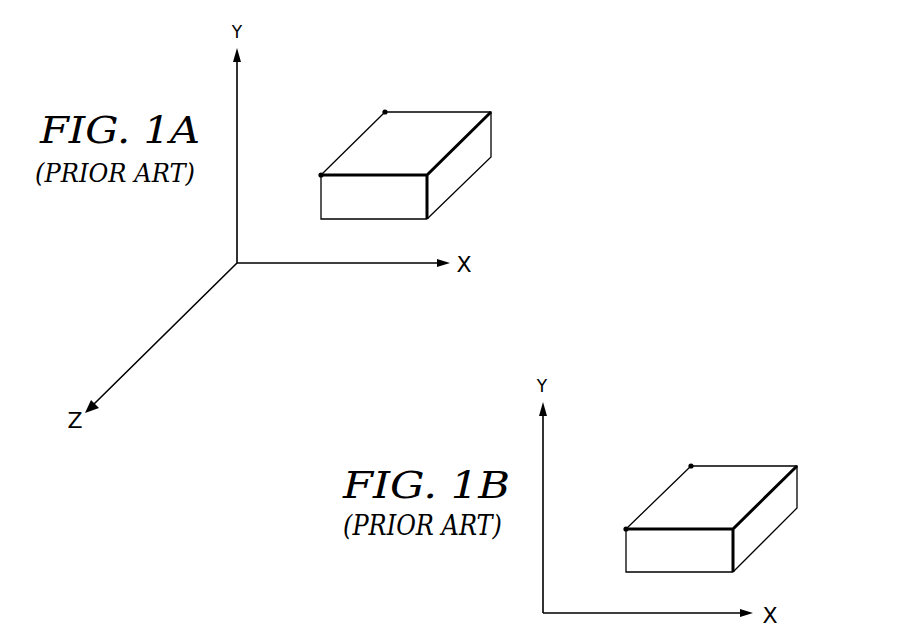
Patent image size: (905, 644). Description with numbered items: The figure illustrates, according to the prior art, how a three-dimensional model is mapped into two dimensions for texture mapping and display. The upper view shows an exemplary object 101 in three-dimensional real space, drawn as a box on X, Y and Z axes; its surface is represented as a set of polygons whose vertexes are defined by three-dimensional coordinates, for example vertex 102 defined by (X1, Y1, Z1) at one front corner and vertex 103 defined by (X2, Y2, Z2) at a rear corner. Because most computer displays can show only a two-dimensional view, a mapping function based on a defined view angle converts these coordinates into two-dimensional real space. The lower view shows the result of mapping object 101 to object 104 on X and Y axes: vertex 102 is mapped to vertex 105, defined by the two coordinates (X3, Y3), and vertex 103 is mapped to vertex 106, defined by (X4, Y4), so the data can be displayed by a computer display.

In FIG. 1A, the object 101 is at (491, 132).
In FIG. 1A, the vertex 102 is at (321, 175).
In FIG. 1A, the vertex 103 is at (385, 112).
In FIG. 1B, the object 104 is at (797, 486).
In FIG. 1B, the vertex 105 is at (626, 529).
In FIG. 1B, the vertex 106 is at (691, 466).